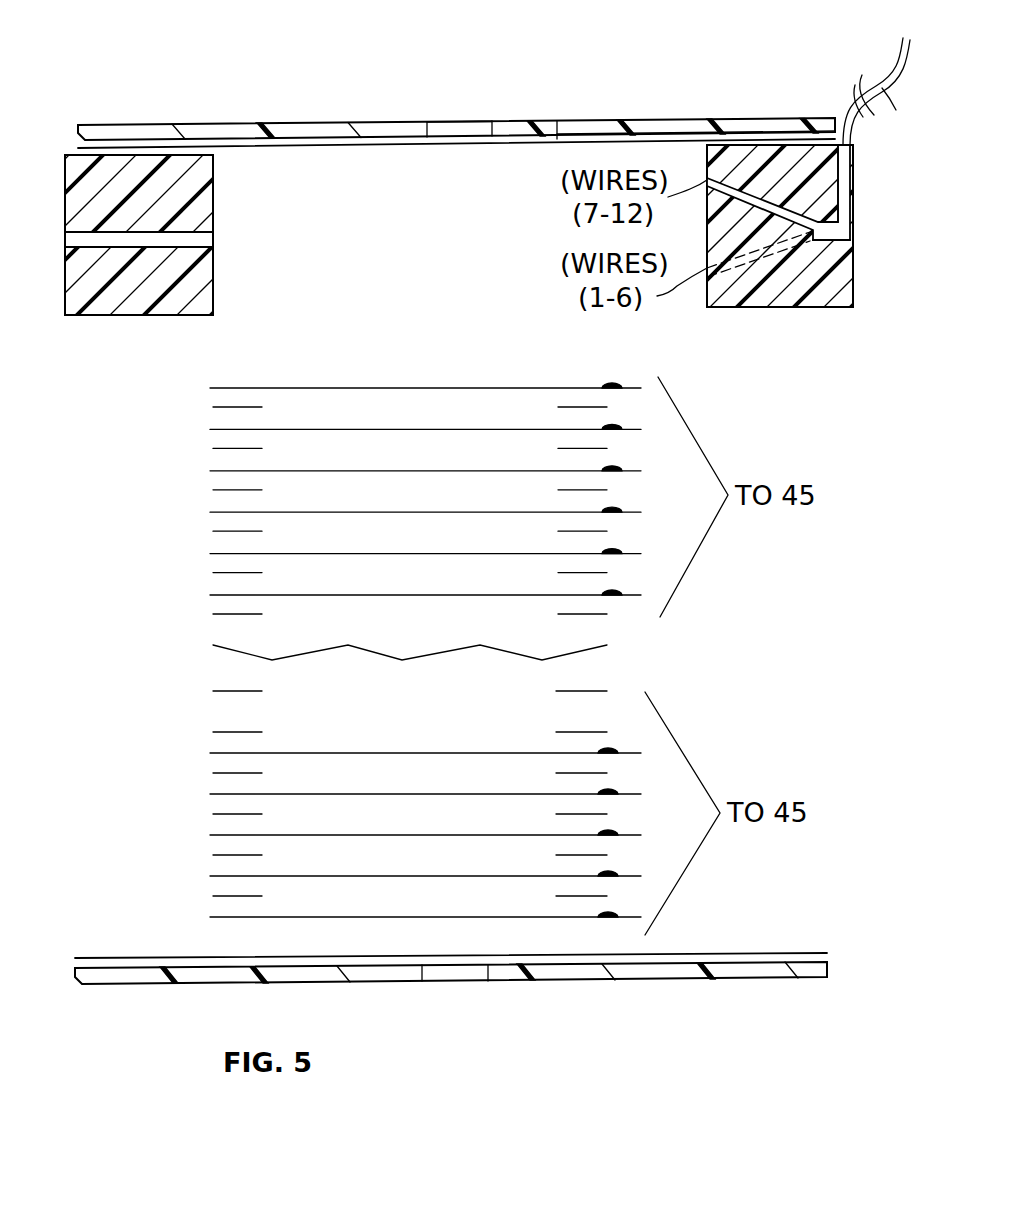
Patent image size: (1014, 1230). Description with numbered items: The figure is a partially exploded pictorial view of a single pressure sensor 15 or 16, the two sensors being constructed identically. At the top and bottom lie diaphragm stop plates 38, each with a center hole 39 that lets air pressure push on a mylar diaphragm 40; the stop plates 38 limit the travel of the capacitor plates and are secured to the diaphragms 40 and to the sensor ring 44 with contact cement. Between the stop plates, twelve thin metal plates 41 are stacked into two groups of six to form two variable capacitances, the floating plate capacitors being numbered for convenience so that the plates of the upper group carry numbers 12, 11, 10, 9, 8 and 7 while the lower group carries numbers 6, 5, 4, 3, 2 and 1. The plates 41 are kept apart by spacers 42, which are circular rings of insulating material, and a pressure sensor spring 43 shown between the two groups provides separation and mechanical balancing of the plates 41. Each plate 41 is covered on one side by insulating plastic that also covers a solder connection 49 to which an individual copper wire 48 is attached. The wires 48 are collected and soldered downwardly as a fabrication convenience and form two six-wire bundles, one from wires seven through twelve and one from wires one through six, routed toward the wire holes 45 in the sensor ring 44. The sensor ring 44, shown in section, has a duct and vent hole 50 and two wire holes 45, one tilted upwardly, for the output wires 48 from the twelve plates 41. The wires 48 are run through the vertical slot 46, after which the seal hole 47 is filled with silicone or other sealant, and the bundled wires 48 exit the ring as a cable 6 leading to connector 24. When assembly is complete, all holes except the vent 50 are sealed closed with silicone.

The sensor 15 is at (236, 99).
The sensor 16 is at (237, 99).
The diaphragm stop plate 38 is at (626, 100).
The center hole 39 is at (470, 125).
The mylar diaphragm 40 is at (557, 138).
The thin metal plate 41 is at (444, 372).
The spacer 42 is at (560, 407).
The pressure sensor spring 43 is at (406, 658).
The sensor ring 44 is at (213, 180).
The wire hole 45 is at (773, 193).
The vertical slot 46 is at (852, 172).
The seal hole 47 is at (852, 216).
The copper wire 48 is at (850, 106).
The solder connection 49 is at (620, 598).
The vent hole 50 is at (192, 238).
The cable 6 is at (876, 91).
The connector 24 is at (885, 25).
The wire 1 is at (436, 916).
The wire 2 is at (436, 875).
The wire 3 is at (436, 834).
The wire 4 is at (436, 793).
The wire 5 is at (436, 752).
The wire 7 is at (436, 594).
The wire 8 is at (436, 553).
The wire 9 is at (436, 511).
The wire 10 is at (444, 470).
The wire 11 is at (444, 428).
The wire 12 is at (565, 360).